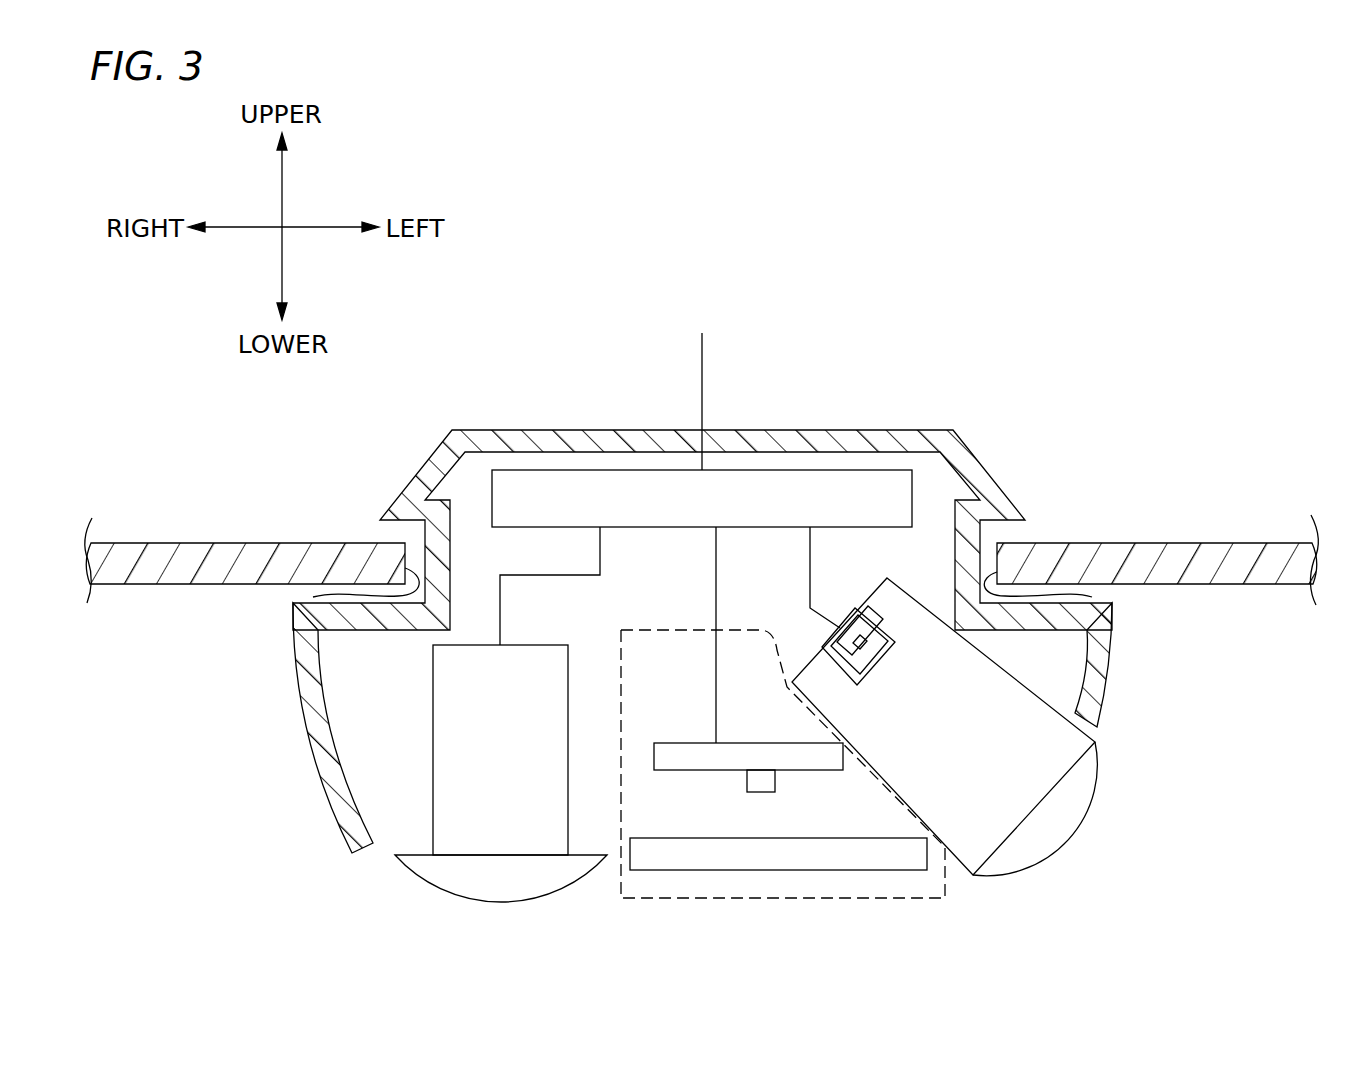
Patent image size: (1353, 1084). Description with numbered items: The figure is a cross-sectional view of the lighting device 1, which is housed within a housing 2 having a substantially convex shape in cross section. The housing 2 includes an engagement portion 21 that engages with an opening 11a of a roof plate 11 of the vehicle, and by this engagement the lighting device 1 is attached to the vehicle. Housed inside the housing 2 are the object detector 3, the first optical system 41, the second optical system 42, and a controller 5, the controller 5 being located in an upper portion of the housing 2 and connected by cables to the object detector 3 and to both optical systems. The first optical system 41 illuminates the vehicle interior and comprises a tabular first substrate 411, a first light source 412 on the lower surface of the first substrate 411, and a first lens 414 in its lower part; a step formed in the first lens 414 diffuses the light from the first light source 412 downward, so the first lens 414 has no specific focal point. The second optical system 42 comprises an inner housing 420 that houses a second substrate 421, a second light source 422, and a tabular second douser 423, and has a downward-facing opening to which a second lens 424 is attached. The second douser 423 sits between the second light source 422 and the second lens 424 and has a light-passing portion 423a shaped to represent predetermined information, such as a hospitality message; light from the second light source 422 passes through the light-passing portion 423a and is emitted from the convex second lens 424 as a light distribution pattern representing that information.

The lighting device 1 is at (862, 364).
The housing 2 is at (1105, 696).
The object detector 3 is at (441, 700).
The controller 5 is at (568, 472).
The roof plate 11 is at (160, 586).
The opening 11a is at (313, 597).
The engagement portion 21 is at (383, 518).
The first optical system 41 is at (740, 898).
The second optical system 42 is at (1041, 698).
The first substrate 411 is at (693, 746).
The first light source 412 is at (767, 788).
The first lens 414 is at (722, 838).
The inner housing 420 is at (947, 628).
The second substrate 421 is at (852, 607).
The second light source 422 is at (858, 662).
The second douser 423 is at (890, 650).
The light-passing portion 423a is at (868, 668).
The second lens 424 is at (1090, 798).